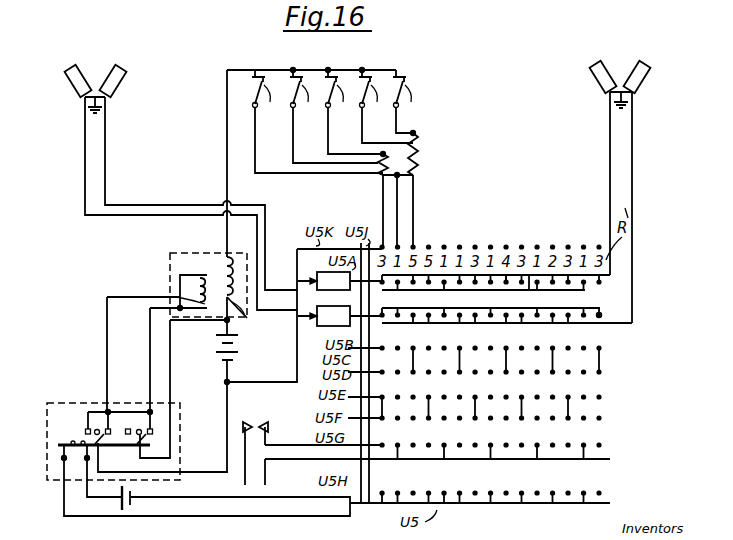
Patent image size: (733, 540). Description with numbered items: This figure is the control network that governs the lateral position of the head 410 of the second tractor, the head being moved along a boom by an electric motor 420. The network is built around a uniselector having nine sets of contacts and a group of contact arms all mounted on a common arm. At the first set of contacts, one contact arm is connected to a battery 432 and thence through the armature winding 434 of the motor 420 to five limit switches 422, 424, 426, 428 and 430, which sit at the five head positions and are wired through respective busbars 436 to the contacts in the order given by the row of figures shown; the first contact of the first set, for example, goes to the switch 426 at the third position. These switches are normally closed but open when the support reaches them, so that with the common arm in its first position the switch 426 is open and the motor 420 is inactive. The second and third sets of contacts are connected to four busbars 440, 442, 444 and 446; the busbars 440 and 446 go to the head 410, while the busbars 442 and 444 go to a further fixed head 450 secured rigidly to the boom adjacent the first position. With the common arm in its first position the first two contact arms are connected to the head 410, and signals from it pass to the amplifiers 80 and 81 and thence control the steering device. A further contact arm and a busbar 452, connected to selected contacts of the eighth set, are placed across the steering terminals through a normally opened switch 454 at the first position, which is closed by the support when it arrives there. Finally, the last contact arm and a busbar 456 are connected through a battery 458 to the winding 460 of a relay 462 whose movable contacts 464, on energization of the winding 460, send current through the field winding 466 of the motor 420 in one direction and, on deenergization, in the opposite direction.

The head 410 is at (650, 64).
The electric motor 420 is at (183, 243).
The limit switch 422 is at (270, 103).
The limit switch 424 is at (308, 103).
The limit switch 426 is at (343, 103).
The limit switch 428 is at (378, 103).
The limit switch 430 is at (413, 103).
The battery 432 is at (236, 360).
The armature winding 434 is at (250, 297).
The busbars 436 is at (419, 159).
The busbar 440 is at (511, 274).
The busbar 442 is at (529, 274).
The busbar 444 is at (589, 310).
The busbar 446 is at (600, 320).
The fixed head 450 is at (122, 70).
The busbar 452 is at (308, 466).
The normally opened switch 454 is at (250, 422).
The busbar 456 is at (484, 506).
The battery 458 is at (127, 498).
The winding 460 is at (68, 443).
The relay 462 is at (126, 402).
The movable contacts 464 is at (104, 452).
The field winding 466 is at (177, 294).
The amplifier 80 is at (340, 281).
The amplifier 81 is at (340, 316).